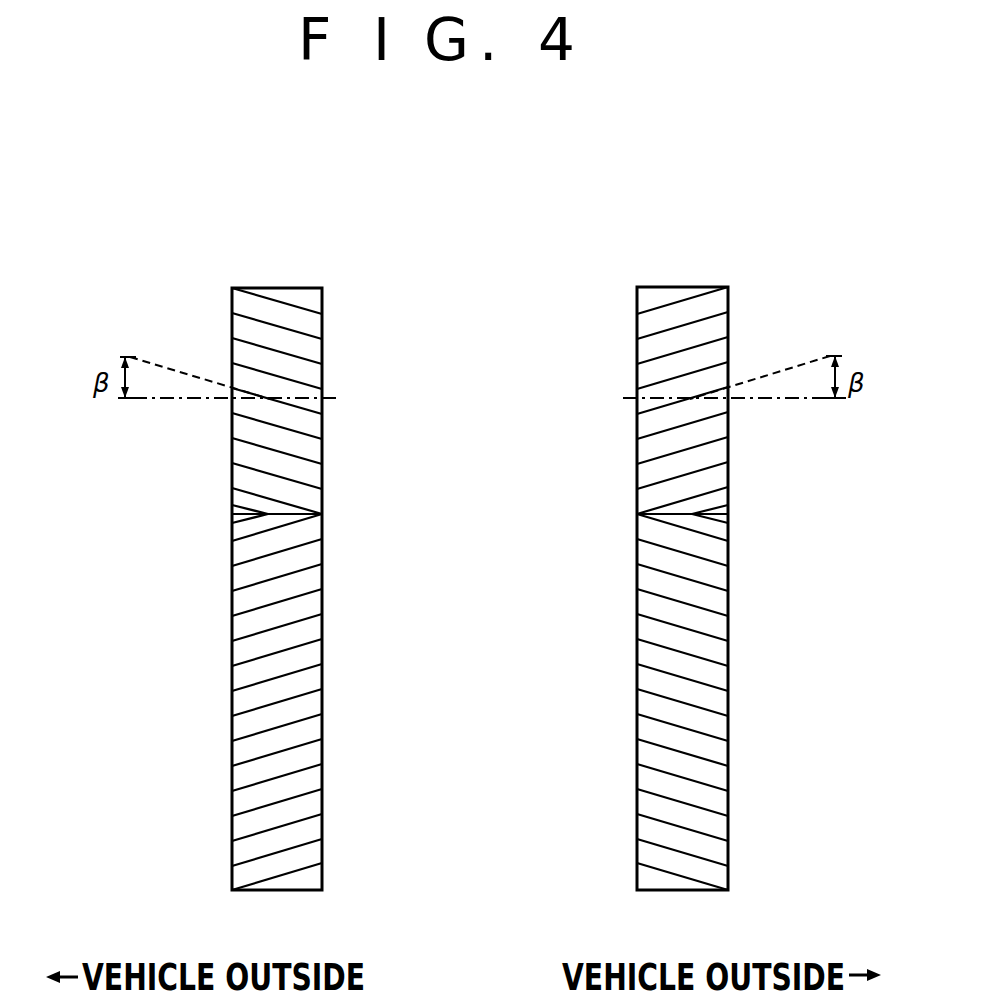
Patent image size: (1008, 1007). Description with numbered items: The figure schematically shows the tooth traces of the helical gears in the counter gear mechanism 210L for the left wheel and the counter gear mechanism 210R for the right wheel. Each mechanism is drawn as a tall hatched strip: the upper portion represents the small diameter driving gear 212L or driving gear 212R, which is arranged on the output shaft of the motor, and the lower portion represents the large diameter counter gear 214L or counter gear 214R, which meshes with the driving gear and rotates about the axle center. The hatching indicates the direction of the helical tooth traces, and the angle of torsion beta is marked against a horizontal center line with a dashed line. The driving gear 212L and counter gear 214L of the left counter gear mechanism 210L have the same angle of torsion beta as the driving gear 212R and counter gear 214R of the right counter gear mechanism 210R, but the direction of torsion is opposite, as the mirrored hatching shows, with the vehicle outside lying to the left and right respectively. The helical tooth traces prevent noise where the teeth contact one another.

The counter gear mechanism for the left wheel 210L is at (263, 260).
The driving gear 212L is at (197, 457).
The counter gear 214L is at (197, 630).
The counter gear mechanism for the right wheel 210R is at (690, 260).
The driving gear 212R is at (763, 457).
The counter gear 214R is at (763, 630).